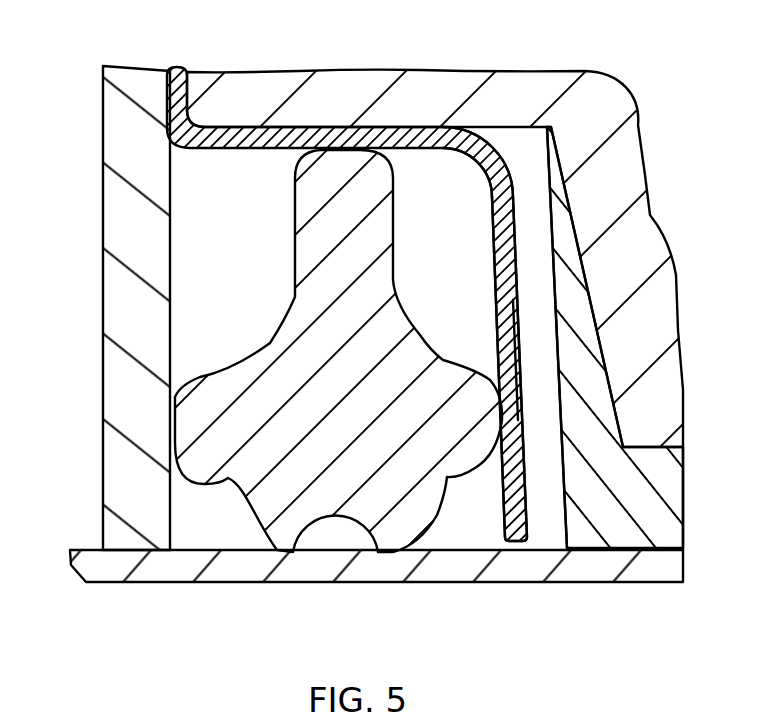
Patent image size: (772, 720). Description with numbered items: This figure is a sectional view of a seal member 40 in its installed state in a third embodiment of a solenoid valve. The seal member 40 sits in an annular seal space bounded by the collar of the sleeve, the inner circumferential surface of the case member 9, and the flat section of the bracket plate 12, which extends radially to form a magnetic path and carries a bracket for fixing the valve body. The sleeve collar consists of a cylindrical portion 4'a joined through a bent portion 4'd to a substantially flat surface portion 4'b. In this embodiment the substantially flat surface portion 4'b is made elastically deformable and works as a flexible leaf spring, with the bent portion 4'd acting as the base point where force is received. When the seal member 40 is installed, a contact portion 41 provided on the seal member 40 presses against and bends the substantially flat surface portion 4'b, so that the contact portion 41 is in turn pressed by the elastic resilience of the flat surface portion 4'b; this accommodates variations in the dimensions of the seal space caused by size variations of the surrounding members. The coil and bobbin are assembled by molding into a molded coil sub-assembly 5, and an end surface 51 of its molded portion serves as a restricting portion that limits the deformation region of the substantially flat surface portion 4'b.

The bracket plate 12 is at (117, 284).
The case member 9 is at (355, 583).
The molded coil sub-assembly 5 is at (643, 520).
The end surface of molded portion 51 is at (567, 510).
The cylindrical portion 4'a is at (347, 279).
The substantially flat surface portion 4'b is at (607, 357).
The bent portion 4'd is at (493, 102).
The seal member 40 is at (398, 213).
The contact portion 41 is at (495, 358).